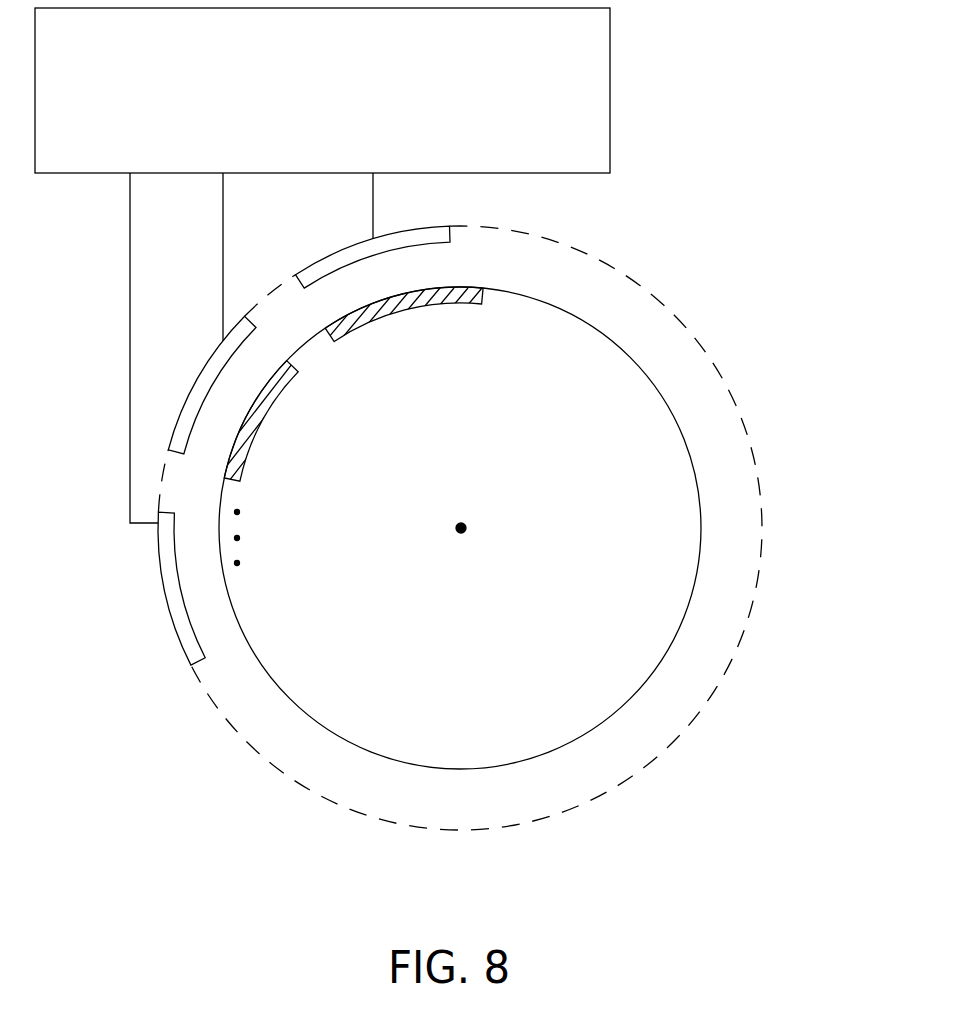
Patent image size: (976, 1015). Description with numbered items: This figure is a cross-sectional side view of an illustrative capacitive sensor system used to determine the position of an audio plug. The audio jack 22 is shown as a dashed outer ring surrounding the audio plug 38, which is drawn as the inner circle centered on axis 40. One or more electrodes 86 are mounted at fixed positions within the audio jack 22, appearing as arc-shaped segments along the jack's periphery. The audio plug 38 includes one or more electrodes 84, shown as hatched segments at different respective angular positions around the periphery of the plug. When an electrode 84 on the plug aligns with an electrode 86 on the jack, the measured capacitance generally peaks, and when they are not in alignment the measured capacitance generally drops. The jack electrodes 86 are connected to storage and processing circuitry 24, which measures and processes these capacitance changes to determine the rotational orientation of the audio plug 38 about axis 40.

The storage and processing circuitry 24 is at (611, 88).
The audio jack 22 is at (602, 260).
The audio plug 38 is at (685, 513).
The axis 40 is at (461, 535).
The electrodes 86 is at (328, 263).
The electrodes 84 is at (447, 307).